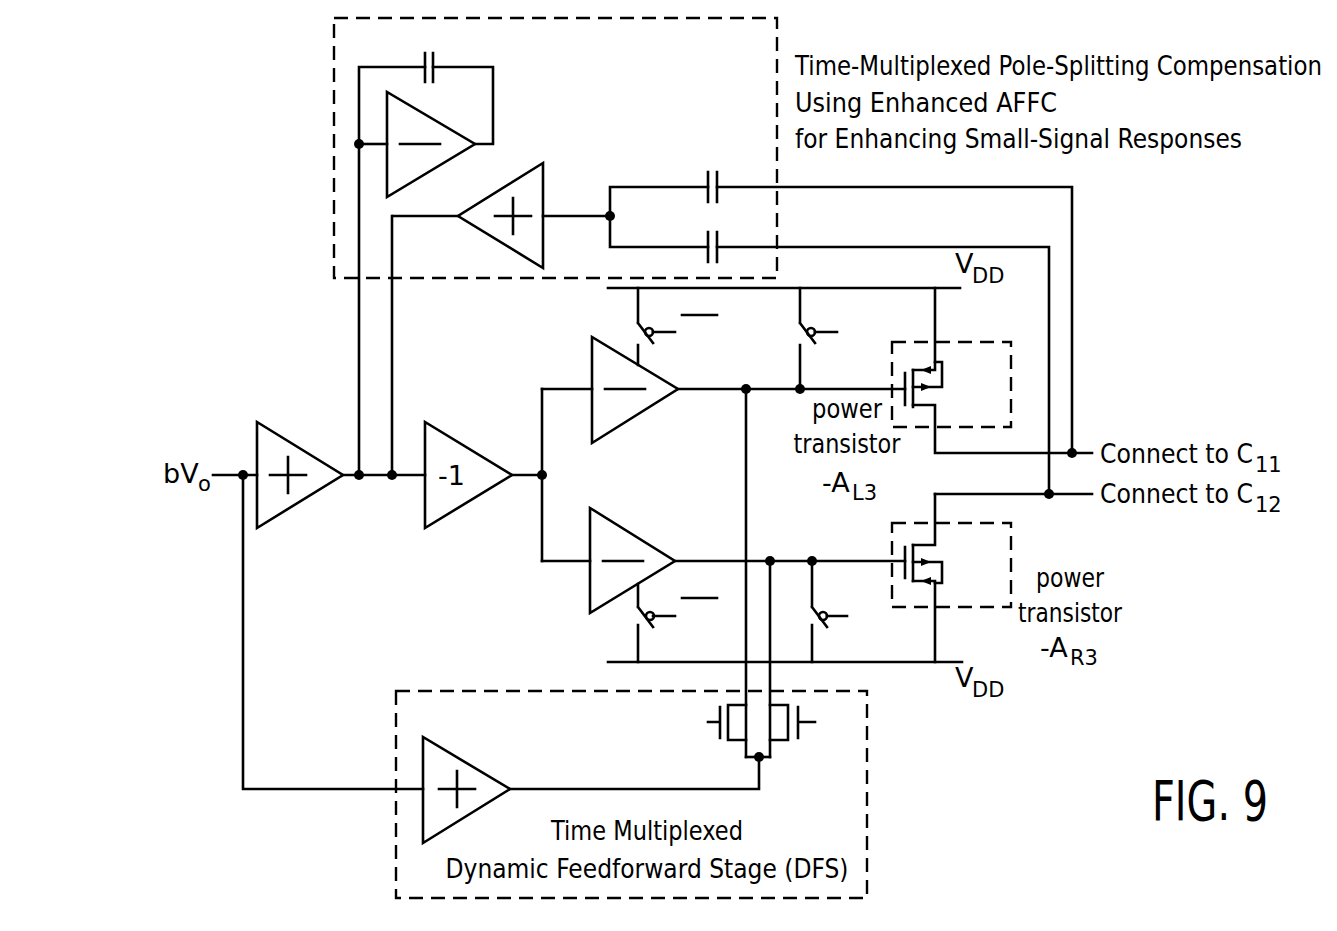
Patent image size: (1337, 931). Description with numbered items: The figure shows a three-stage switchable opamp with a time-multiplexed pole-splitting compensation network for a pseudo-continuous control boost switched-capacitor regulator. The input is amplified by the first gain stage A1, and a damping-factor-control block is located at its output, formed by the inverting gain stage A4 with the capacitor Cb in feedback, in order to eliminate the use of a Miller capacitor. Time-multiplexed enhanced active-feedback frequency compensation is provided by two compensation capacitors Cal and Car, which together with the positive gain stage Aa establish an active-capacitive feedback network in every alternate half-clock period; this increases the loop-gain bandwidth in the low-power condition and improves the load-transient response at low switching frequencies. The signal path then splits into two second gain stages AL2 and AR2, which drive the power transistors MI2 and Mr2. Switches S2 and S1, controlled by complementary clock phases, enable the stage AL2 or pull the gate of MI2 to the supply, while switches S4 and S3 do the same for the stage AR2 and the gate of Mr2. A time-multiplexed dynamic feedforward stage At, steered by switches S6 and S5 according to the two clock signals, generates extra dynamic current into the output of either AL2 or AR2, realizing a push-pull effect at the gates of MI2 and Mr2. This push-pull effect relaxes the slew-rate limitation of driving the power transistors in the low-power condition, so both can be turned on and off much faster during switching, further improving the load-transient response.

The first gain stage A1 is at (341, 473).
The damping-factor-control capacitor Cb is at (426, 84).
The damping-factor-control gain stage A4 is at (419, 144).
The positive gain stage Aa is at (501, 216).
The compensation capacitor Cal is at (841, 302).
The compensation capacitor Car is at (829, 353).
The switch S1 is at (822, 338).
The switch S2 is at (662, 326).
The switch S3 is at (834, 611).
The switch S4 is at (661, 623).
The switch S5 is at (814, 746).
The switch S6 is at (705, 746).
The second gain stage AL2 is at (723, 393).
The second gain stage AR2 is at (723, 560).
The power transistor MI2 is at (992, 370).
The power transistor Mr2 is at (951, 578).
The dynamic feedforward stage At is at (591, 788).